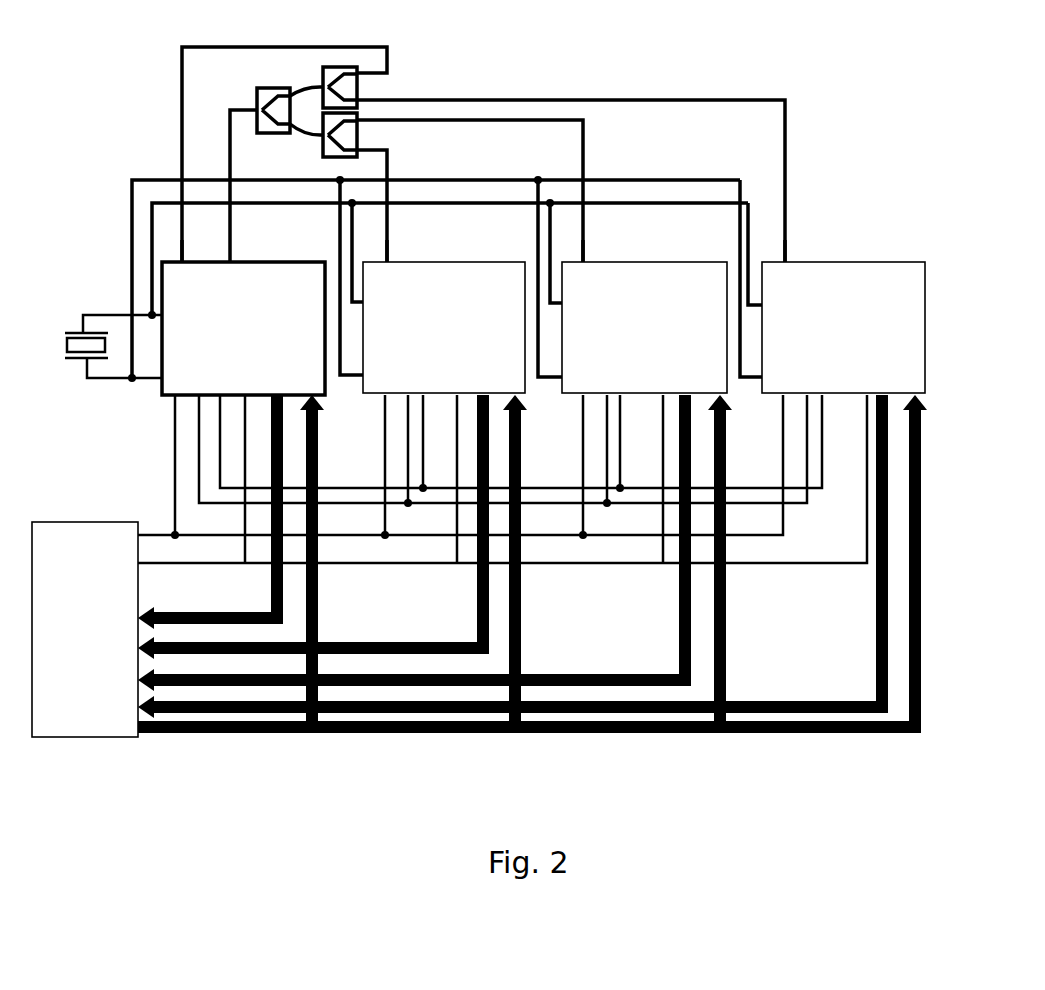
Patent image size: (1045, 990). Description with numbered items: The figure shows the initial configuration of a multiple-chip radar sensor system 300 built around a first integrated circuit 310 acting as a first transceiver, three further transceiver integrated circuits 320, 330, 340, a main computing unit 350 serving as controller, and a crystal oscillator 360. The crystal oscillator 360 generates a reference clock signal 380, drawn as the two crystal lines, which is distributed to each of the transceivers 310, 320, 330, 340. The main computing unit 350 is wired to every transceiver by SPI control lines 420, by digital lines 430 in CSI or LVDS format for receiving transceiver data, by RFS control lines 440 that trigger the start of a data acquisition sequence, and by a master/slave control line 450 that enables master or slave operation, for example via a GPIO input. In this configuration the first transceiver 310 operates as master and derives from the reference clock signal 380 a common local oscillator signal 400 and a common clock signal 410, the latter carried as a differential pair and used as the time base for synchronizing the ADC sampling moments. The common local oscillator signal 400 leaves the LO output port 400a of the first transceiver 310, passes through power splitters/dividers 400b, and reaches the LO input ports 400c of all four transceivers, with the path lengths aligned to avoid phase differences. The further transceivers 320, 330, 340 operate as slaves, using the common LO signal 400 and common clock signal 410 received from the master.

The multiple-chip radar sensor system 300 is at (50, 266).
The first integrated circuit 310 is at (243, 328).
The further integrated circuit 320 is at (444, 327).
The further integrated circuit 330 is at (644, 327).
The further integrated circuit 340 is at (843, 327).
The main computing unit 350 is at (85, 629).
The crystal oscillator 360 is at (58, 348).
The reference clock signal 380 is at (143, 270).
The common local oscillator signal 400 is at (392, 46).
The LO output port 400a is at (212, 132).
The power splitter/divider 400b is at (263, 83).
The LO input port 400c is at (160, 240).
The common clock signal 410 is at (816, 497).
The SPI control lines 420 is at (420, 740).
The digital lines 430 is at (152, 610).
The RFS control lines 440 is at (556, 541).
The master/slave control line 450 is at (556, 578).